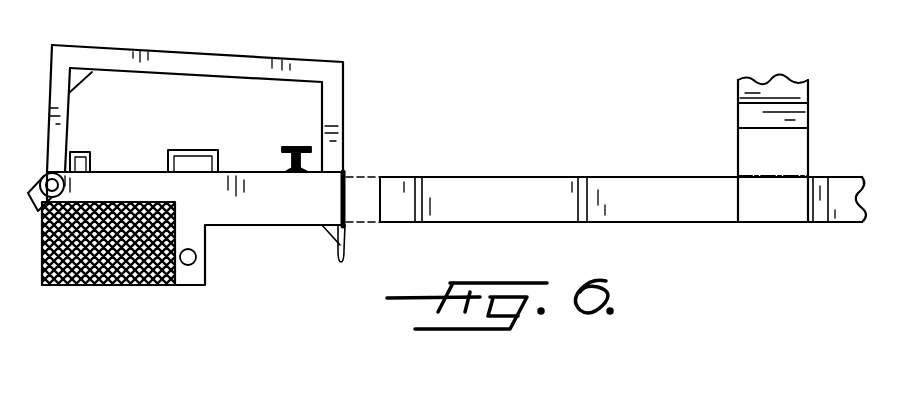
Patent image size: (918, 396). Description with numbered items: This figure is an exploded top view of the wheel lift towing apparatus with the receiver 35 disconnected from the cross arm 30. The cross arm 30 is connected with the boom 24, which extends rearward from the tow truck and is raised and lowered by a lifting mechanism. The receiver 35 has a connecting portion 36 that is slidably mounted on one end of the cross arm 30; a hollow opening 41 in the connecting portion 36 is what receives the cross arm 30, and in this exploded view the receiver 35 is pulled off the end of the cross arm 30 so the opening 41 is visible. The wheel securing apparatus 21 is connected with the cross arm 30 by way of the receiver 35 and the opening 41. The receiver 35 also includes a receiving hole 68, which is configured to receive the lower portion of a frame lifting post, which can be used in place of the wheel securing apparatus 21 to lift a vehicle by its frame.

The wheel securing apparatus 21 is at (237, 240).
The boom 24 is at (786, 158).
The cross arm 30 is at (532, 195).
The receiver 35 is at (302, 228).
The connecting portion 36 is at (347, 177).
The hollow opening 41 is at (348, 199).
The receiving hole 68 is at (187, 258).